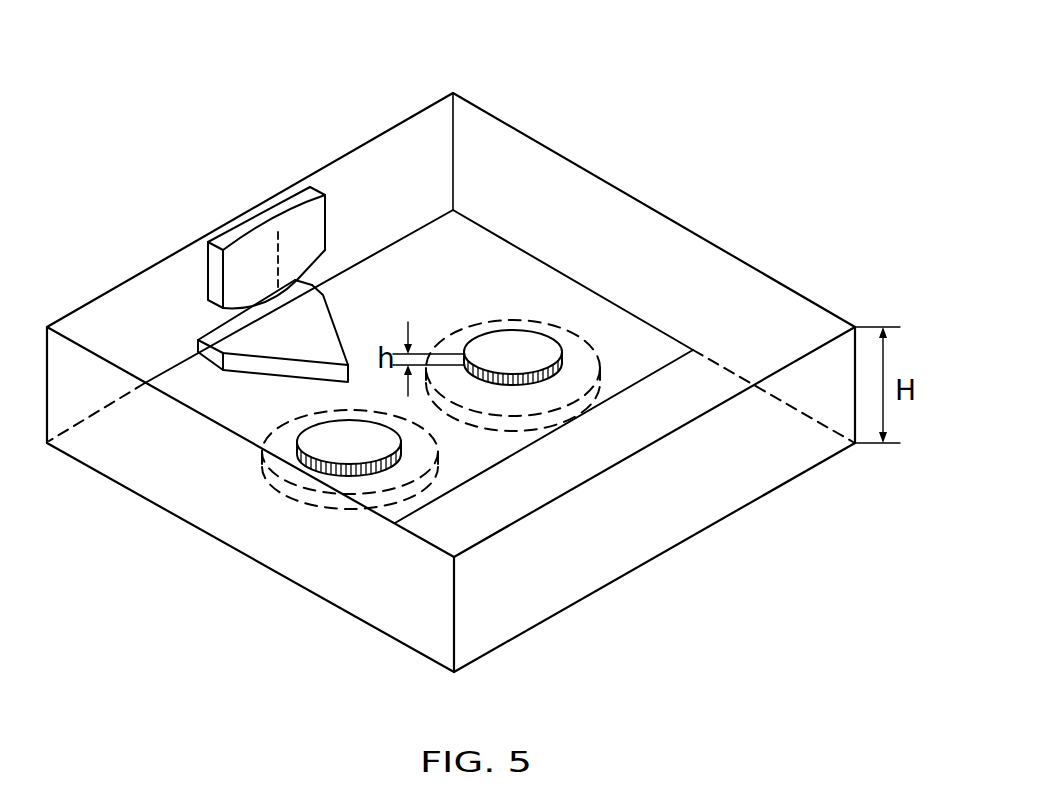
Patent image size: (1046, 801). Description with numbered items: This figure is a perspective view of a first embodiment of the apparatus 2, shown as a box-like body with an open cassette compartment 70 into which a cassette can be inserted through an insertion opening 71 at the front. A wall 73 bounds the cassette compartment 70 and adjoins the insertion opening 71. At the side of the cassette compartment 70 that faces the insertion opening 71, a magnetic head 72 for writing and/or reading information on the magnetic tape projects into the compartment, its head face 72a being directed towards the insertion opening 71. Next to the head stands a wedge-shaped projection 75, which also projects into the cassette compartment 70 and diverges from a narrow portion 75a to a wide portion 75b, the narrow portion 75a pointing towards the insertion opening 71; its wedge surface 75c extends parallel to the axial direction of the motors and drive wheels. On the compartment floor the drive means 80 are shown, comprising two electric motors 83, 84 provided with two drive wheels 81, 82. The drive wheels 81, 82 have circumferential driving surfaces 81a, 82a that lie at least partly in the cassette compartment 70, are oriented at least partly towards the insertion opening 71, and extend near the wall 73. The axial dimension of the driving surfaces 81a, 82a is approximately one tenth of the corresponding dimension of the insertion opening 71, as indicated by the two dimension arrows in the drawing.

The apparatus 2 is at (376, 80).
The cassette compartment 70 is at (550, 197).
The insertion opening 71 is at (730, 492).
The wall 73 is at (557, 580).
The magnetic head 72 is at (299, 234).
The head face 72a is at (305, 222).
The wedge-shaped projection 75 is at (296, 343).
The narrow portion 75a is at (350, 370).
The wide portion 75b is at (312, 285).
The wedge surface 75c is at (253, 367).
The drive means 80 is at (552, 333).
The drive wheel 82 is at (570, 339).
The circumferential driving surface 82a is at (563, 377).
The electric motor 84 is at (557, 330).
The drive wheel 81 is at (374, 461).
The circumferential driving surface 81a is at (400, 468).
The electric motor 83 is at (322, 512).